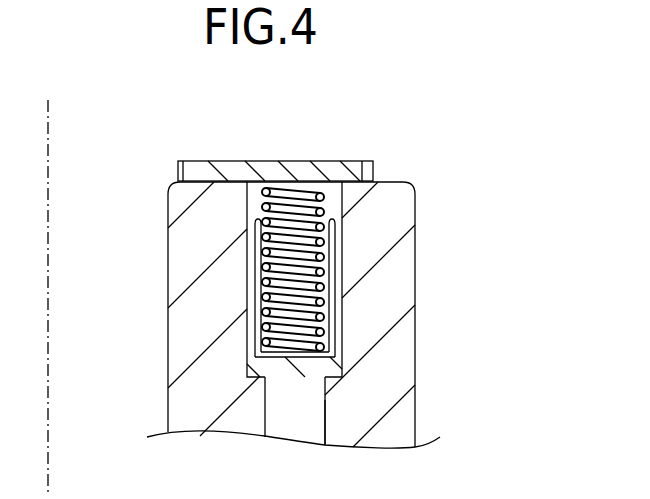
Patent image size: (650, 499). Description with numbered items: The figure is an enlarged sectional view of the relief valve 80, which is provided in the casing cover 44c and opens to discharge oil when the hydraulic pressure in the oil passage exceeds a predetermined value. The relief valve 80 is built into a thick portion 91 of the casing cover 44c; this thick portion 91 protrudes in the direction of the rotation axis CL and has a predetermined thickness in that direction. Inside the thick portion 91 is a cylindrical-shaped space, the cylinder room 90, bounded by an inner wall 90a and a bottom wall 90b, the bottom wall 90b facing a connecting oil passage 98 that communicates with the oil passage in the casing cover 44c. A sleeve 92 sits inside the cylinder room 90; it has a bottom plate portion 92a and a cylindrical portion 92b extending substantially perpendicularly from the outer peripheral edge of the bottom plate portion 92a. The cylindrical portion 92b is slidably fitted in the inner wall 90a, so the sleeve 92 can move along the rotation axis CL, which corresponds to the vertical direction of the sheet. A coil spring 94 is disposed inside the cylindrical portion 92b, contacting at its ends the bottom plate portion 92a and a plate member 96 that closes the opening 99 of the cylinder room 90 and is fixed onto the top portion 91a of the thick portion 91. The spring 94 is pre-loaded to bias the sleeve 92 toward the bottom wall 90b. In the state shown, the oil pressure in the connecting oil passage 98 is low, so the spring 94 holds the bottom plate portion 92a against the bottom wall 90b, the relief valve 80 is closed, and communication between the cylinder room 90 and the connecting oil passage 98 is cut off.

The relief valve 80 is at (389, 117).
The thick portion 91 is at (339, 304).
The casing cover 44c is at (339, 304).
The top portion 91a is at (392, 182).
The plate member 96 is at (207, 172).
The sleeve 92 is at (230, 336).
The bottom plate portion 92a is at (280, 368).
The cylindrical portion 92b is at (247, 248).
The connecting oil passage 98 is at (323, 425).
The cylinder room 90 is at (294, 299).
The inner wall 90a is at (332, 278).
The bottom wall 90b is at (255, 366).
The spring 94 is at (332, 244).
The opening 99 is at (298, 178).
The rotation axis CL is at (50, 180).